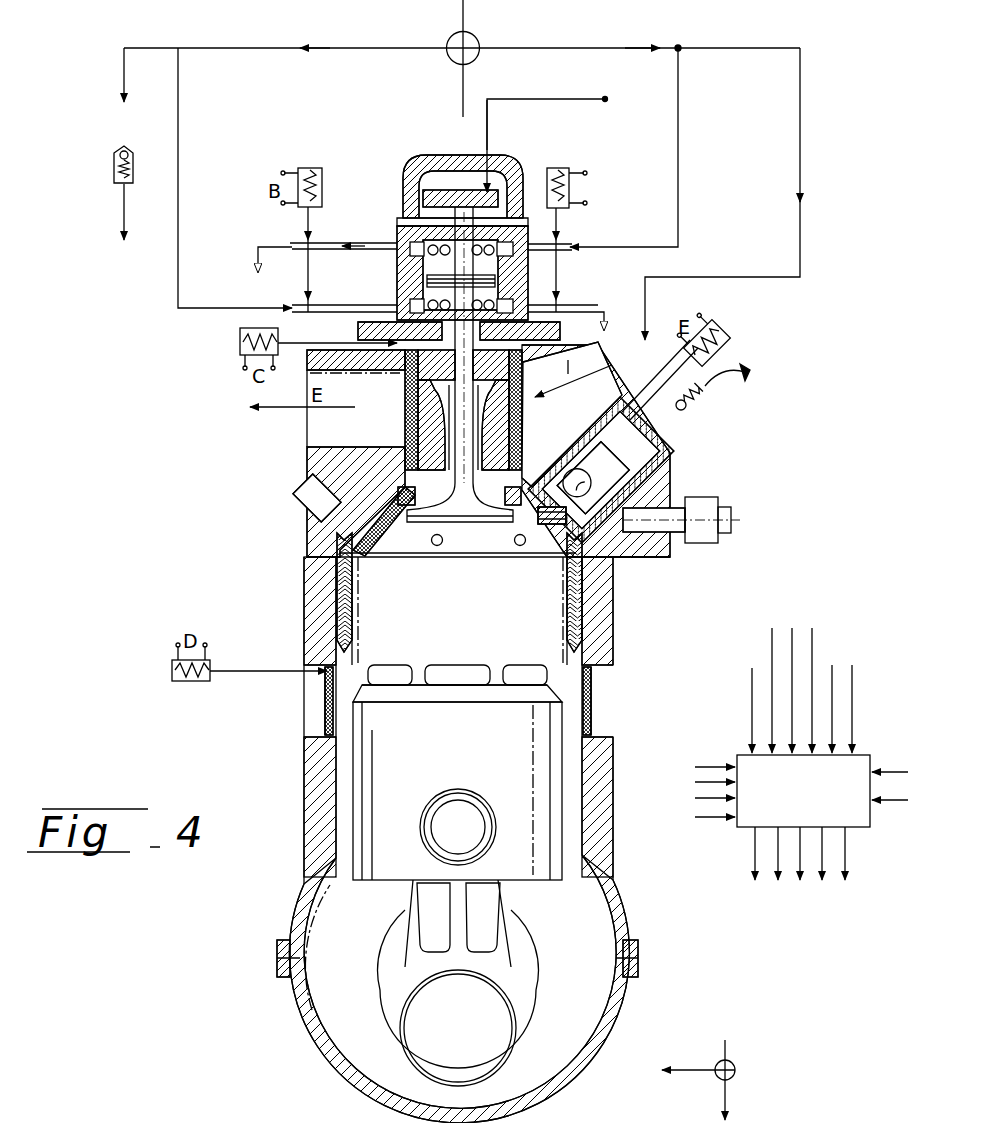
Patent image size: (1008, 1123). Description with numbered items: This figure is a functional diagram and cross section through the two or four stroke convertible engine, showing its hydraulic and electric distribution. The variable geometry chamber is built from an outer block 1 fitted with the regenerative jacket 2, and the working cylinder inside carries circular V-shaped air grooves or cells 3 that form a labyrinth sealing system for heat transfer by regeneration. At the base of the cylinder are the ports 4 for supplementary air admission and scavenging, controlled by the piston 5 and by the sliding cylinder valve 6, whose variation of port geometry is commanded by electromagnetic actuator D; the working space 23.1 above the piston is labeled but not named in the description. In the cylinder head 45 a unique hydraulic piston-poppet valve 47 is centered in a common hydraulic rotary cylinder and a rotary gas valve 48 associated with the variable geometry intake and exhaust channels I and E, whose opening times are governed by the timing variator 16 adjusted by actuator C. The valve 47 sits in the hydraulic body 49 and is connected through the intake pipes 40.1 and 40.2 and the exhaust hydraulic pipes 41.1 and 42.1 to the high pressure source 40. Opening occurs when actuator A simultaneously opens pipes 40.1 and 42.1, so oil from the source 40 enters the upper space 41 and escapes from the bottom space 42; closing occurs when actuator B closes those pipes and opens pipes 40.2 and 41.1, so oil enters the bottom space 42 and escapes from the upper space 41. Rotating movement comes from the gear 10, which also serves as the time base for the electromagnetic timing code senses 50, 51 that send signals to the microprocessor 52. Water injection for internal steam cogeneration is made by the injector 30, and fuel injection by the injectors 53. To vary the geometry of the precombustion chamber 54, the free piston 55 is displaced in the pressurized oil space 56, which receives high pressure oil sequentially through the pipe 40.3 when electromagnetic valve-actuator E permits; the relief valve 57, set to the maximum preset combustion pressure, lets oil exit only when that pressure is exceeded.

The outer block 1 is at (598, 607).
The regenerative jacket 2 is at (580, 632).
The air grooves or cells 3 is at (565, 625).
The ports 4 is at (576, 688).
The piston 5 is at (378, 802).
The sliding cylinder valve 6 is at (327, 702).
The gear 10 is at (421, 191).
The timing variator 16 is at (403, 375).
The combustion chamber 23.1 is at (472, 622).
The injector 30 is at (312, 486).
The high pressure source 40 is at (474, 38).
The intake pipe 40.1 is at (569, 243).
The intake pipe 40.2 is at (294, 303).
The pipe 40.3 is at (802, 175).
The upper space 41 is at (490, 267).
The exhaust hydraulic pipe 41.1 is at (292, 242).
The bottom space 42 is at (410, 295).
The exhaust hydraulic pipe 42.1 is at (565, 307).
The cylinder head 45 is at (330, 462).
The hydraulic piston-poppet valve 47 is at (468, 522).
The rotary gas valve 48 is at (403, 418).
The hydraulic body 49 is at (402, 263).
The electromagnetic timing code sense 50 is at (547, 133).
The electromagnetic timing code sense 51 is at (560, 99).
The microprocessor 52 is at (737, 840).
The injector 53 is at (730, 528).
The precombustion chamber 54 is at (592, 513).
The free piston 55 is at (640, 476).
The pressurized oil space 56 is at (640, 452).
The relief valve 57 is at (702, 395).